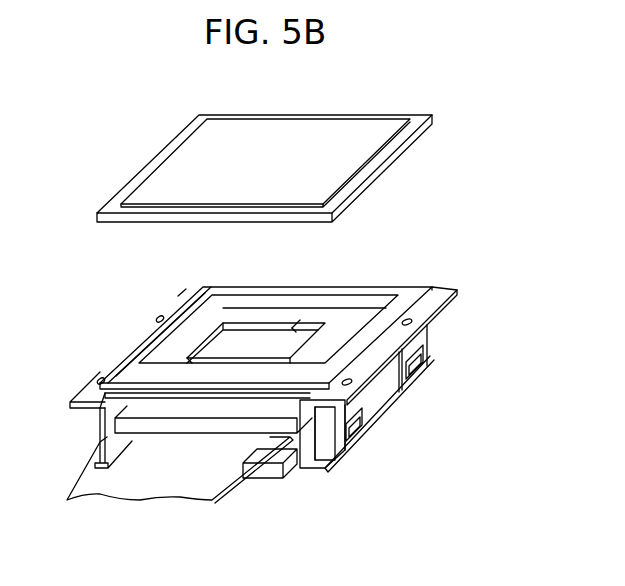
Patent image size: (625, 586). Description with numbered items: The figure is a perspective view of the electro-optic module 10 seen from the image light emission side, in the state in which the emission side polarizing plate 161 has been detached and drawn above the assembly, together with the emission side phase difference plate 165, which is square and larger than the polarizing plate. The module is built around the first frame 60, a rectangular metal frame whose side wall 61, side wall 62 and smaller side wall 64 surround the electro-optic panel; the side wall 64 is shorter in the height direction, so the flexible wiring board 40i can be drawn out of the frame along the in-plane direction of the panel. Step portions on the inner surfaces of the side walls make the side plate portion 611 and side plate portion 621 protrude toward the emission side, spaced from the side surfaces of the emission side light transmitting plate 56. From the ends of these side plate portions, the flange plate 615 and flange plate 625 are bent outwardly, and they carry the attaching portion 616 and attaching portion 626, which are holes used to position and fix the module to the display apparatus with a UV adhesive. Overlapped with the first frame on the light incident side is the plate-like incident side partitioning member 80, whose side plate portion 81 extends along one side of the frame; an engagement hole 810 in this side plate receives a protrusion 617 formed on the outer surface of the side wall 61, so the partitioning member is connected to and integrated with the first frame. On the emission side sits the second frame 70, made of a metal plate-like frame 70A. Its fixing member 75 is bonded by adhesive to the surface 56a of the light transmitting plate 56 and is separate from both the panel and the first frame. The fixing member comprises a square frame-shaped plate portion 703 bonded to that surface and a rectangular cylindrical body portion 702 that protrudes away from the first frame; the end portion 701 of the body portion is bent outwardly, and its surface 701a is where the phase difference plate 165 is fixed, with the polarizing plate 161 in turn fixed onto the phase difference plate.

The electro-optic module 10 is at (57, 152).
The emission side polarizing plate 161 is at (357, 124).
The emission side phase difference plate 165 is at (428, 128).
The second frame 70 is at (335, 287).
The plate-like frame 70A is at (444, 288).
The end portion 701 is at (218, 283).
The surface 701a is at (203, 285).
The body portion 702 is at (228, 300).
The plate portion 703 is at (197, 342).
The emission side light transmitting plate 56 is at (292, 328).
The surface 56a is at (294, 330).
The flange plate 615 is at (458, 290).
The fixing member 75 is at (432, 287).
The attaching portion 616 is at (348, 379).
The side wall 61 is at (387, 380).
The side plate portion 611 is at (313, 425).
The incident side partitioning member 80 is at (428, 365).
The side plate portion 81 is at (430, 345).
The protrusion 617 is at (416, 360).
The engagement hole 810 is at (410, 378).
The first frame 60 is at (70, 393).
The side wall 62 is at (133, 343).
The side plate portion 621 is at (98, 412).
The flange plate 625 is at (183, 292).
The attaching portion 626 is at (156, 318).
The side wall 64 is at (257, 478).
The flexible wiring board 40i is at (134, 481).